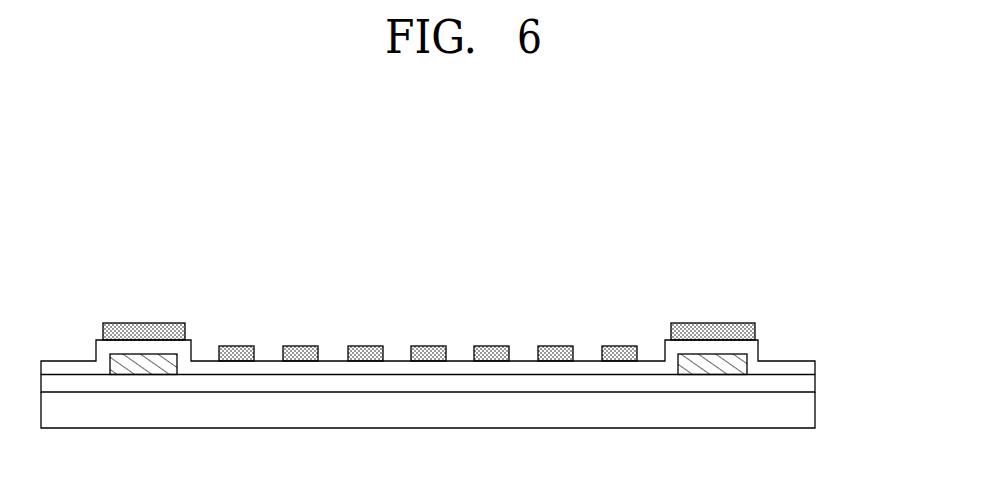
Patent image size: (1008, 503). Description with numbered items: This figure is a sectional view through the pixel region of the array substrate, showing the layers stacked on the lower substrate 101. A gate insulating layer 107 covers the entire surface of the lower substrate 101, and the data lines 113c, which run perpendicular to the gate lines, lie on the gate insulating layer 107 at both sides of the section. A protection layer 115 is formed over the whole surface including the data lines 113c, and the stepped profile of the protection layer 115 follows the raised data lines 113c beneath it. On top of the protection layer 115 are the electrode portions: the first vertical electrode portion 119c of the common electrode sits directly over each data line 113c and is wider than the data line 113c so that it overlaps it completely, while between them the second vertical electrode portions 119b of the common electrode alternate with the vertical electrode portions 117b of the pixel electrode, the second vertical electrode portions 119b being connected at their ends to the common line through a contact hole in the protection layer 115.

The lower substrate 101 is at (810, 418).
The gate insulating layer 107 is at (810, 391).
The protection layer 115 is at (810, 369).
The data line 113c is at (143, 354).
The first vertical electrode portion 119c is at (145, 331).
The second vertical electrode portion 119b is at (237, 352).
The vertical electrode portion 117b is at (301, 352).